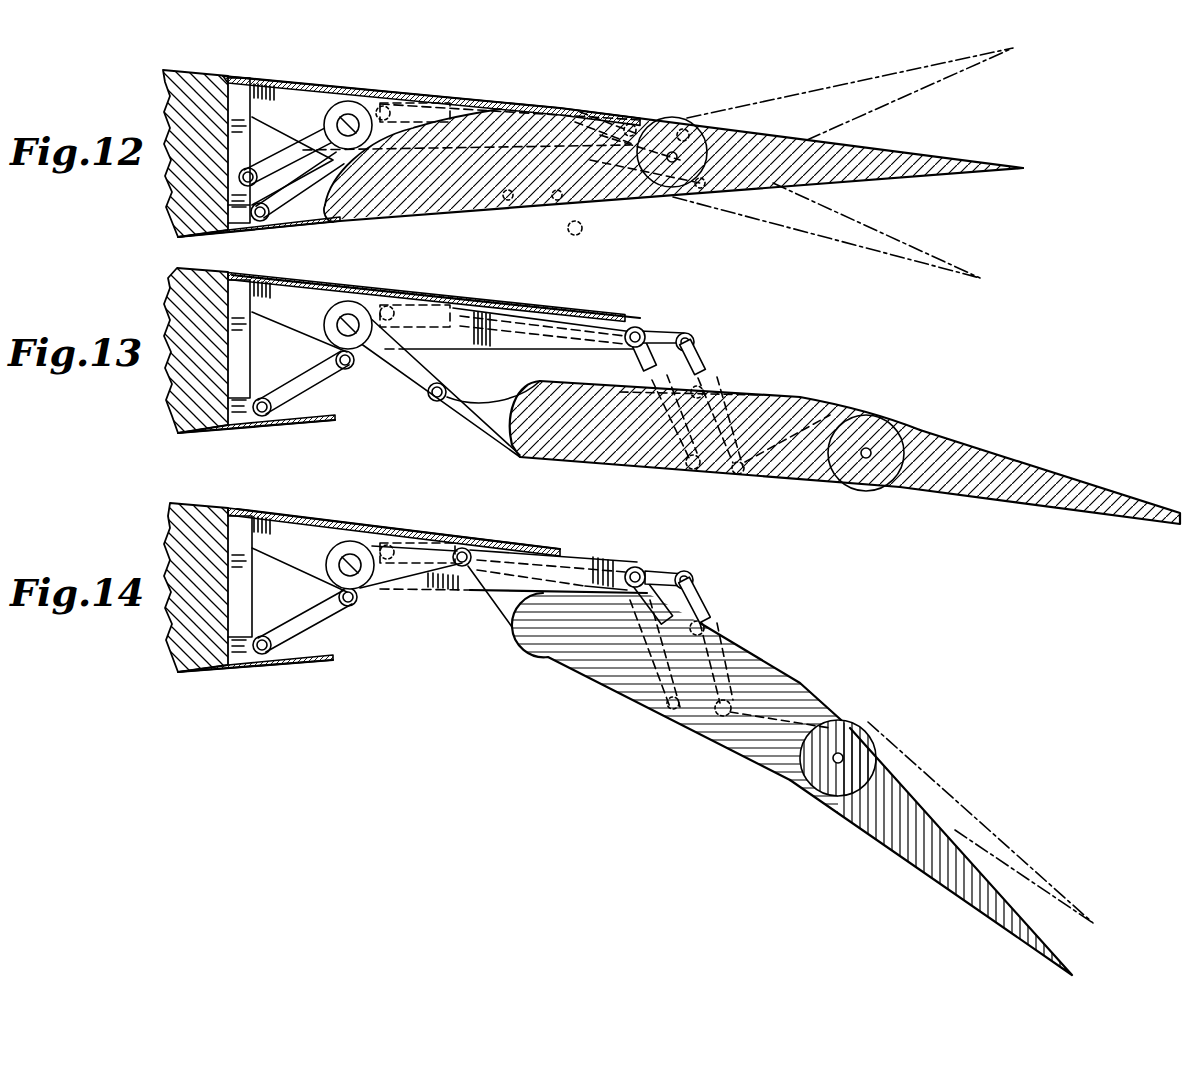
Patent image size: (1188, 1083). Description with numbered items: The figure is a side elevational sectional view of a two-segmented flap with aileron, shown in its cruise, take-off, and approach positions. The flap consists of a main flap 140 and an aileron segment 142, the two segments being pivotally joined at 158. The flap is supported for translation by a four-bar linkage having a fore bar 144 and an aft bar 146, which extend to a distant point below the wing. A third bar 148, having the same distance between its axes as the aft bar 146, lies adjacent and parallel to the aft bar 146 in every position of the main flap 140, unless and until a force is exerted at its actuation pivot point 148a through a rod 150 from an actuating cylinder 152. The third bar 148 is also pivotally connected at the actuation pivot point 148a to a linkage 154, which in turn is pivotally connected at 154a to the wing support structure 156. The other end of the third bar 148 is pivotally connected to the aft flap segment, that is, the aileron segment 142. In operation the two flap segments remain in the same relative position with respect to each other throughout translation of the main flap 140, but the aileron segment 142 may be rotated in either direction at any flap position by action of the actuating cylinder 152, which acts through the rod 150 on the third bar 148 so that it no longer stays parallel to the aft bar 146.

In FIG. 12, the main flap 140 is at (473, 180).
In FIG. 13, the main flap 140 is at (777, 405).
In FIG. 14, the main flap 140 is at (773, 680).
In FIG. 12, the aileron segment 142 is at (856, 88).
In FIG. 13, the aileron segment 142 is at (1023, 473).
In FIG. 14, the aileron segment 142 is at (980, 833).
In FIG. 12, the fore bar 144 is at (312, 130).
In FIG. 13, the fore bar 144 is at (403, 368).
In FIG. 14, the fore bar 144 is at (398, 567).
In FIG. 12, the aft bar 146 is at (588, 110).
In FIG. 13, the aft bar 146 is at (670, 337).
In FIG. 12, the third bar 148 is at (637, 207).
In FIG. 13, the third bar 148 is at (702, 373).
In FIG. 14, the third bar 148 is at (730, 650).
In FIG. 12, the actuation pivot point 148a is at (635, 210).
In FIG. 13, the actuation pivot point 148a is at (747, 480).
In FIG. 14, the actuation pivot point 148a is at (710, 743).
In FIG. 13, the rod 150 is at (660, 333).
In FIG. 14, the rod 150 is at (662, 573).
In FIG. 12, the actuating cylinder 152 is at (430, 92).
In FIG. 13, the actuating cylinder 152 is at (438, 290).
In FIG. 14, the actuating cylinder 152 is at (430, 542).
In FIG. 13, the linkage 154 is at (703, 355).
In FIG. 14, the linkage 154 is at (693, 602).
In FIG. 13, the pivot connection to wing support structure 154a is at (693, 342).
In FIG. 14, the pivot connection to wing support structure 154a is at (690, 582).
In FIG. 13, the wing support structure 156 is at (555, 340).
In FIG. 14, the wing support structure 156 is at (590, 560).
In FIG. 14, the pivot joint between flap segments 158 is at (847, 757).